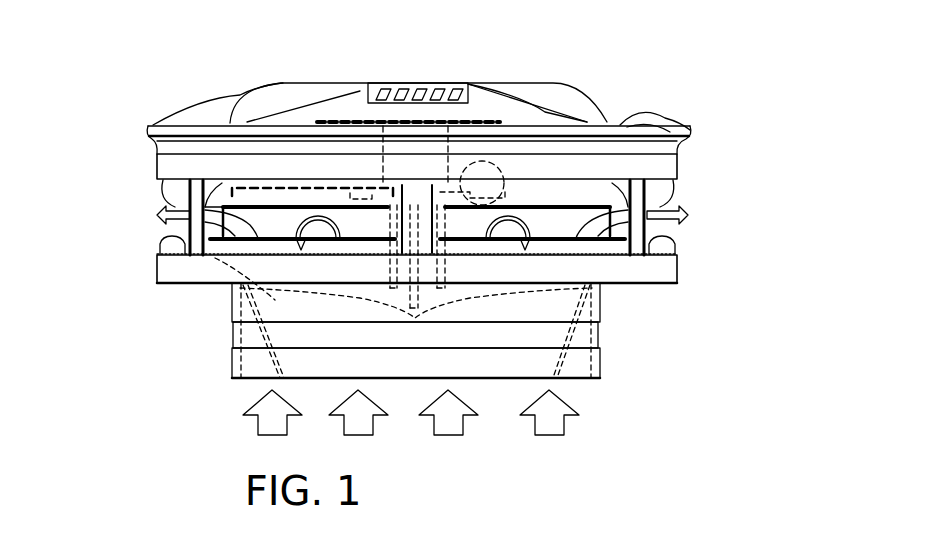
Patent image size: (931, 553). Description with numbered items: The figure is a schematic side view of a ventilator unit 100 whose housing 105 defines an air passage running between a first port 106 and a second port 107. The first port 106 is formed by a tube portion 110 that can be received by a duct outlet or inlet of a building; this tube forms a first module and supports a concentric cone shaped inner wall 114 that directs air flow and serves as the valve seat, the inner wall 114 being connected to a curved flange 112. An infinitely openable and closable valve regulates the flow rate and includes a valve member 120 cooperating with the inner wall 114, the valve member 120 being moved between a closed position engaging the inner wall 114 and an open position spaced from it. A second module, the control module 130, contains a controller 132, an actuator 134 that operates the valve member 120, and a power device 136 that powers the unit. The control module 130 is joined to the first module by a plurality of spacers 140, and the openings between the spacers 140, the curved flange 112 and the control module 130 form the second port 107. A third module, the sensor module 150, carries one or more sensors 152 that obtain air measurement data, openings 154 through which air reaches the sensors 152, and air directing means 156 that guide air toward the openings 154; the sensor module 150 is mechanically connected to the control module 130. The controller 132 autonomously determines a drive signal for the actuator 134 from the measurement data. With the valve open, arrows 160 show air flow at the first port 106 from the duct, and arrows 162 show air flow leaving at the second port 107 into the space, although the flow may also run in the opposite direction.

The ventilator unit 100 is at (434, 251).
The housing 105 is at (331, 318).
The first port 106 is at (498, 397).
The second port 107 is at (173, 232).
The tube portion 110 is at (496, 359).
The curved flange 112 is at (483, 237).
The inner wall 114 is at (481, 327).
The valve member 120 is at (471, 270).
The control module 130 is at (486, 152).
The controller 132 is at (210, 190).
The actuator 134 is at (440, 170).
The power device 136 is at (577, 200).
The spacers 140 is at (615, 217).
The sensor module 150 is at (421, 90).
The sensors 152 is at (408, 69).
The openings 154 is at (431, 58).
The air directing means 156 is at (286, 77).
The arrows 160 is at (515, 412).
The arrows 162 is at (698, 221).